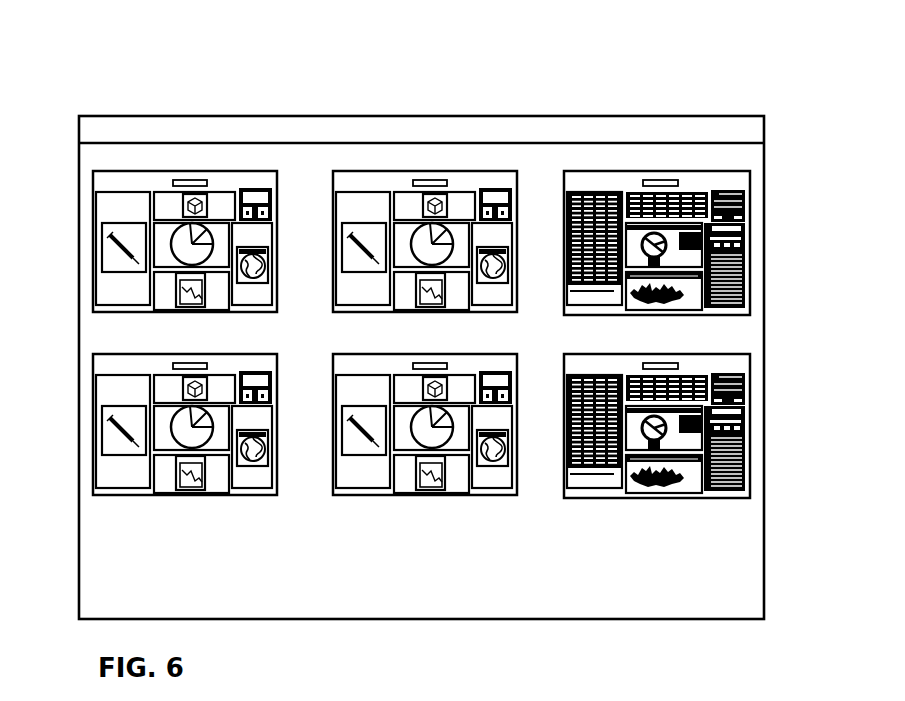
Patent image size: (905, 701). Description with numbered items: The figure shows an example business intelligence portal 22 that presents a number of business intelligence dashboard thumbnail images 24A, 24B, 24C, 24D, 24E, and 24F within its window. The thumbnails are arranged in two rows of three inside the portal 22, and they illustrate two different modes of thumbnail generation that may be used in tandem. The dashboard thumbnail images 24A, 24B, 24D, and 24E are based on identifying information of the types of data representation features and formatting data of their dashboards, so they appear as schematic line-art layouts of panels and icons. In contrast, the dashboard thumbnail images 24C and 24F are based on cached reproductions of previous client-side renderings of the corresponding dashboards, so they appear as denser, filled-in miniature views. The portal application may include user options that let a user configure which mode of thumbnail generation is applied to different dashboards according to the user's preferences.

The business intelligence portal 22 is at (416, 319).
The business intelligence dashboard thumbnail image 24A is at (146, 241).
The business intelligence dashboard thumbnail image 24B is at (449, 231).
The business intelligence dashboard thumbnail image 24C is at (696, 243).
The business intelligence dashboard thumbnail image 24D is at (146, 424).
The business intelligence dashboard thumbnail image 24E is at (449, 413).
The business intelligence dashboard thumbnail image 24F is at (697, 426).